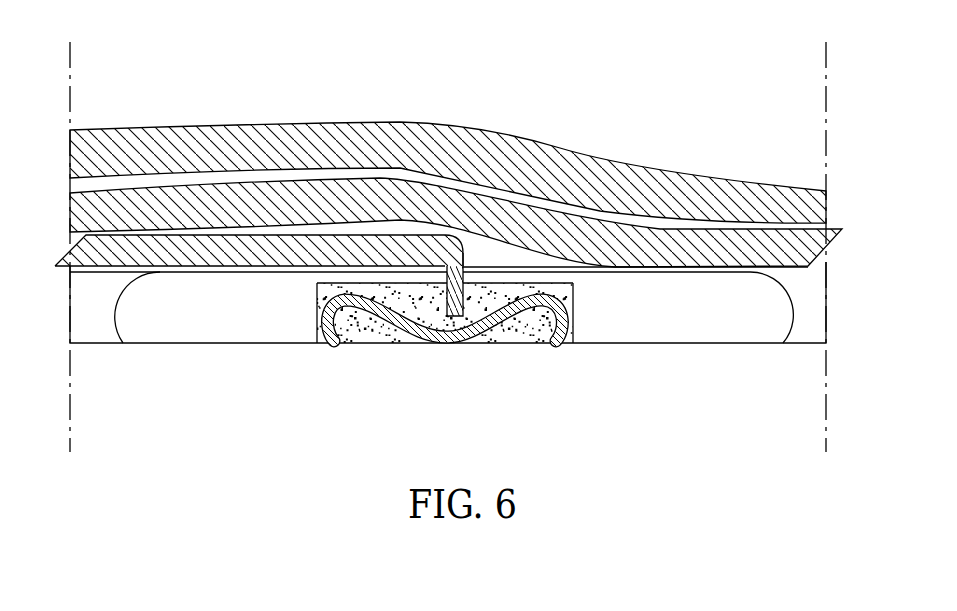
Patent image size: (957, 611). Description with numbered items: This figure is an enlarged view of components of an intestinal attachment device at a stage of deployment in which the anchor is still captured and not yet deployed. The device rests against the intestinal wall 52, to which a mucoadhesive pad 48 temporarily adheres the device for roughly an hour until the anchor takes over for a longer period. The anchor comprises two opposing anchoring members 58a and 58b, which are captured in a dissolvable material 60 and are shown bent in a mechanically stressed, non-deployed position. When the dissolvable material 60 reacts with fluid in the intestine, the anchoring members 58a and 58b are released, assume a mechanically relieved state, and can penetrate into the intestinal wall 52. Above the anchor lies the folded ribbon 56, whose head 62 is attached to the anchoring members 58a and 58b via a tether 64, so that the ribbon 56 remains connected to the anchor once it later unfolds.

The mucoadhesive pad 48 is at (665, 335).
The intestinal wall 52 is at (93, 345).
The ribbon 56 is at (263, 252).
The anchoring member 58a is at (567, 333).
The anchoring member 58b is at (327, 337).
The dissolvable material 60 is at (383, 340).
The head 62 is at (463, 256).
The tether 64 is at (470, 340).